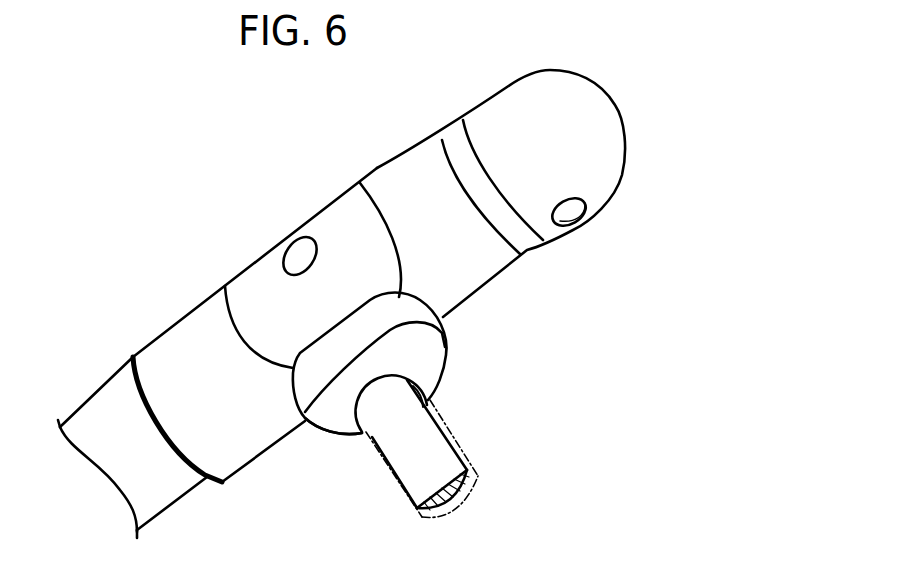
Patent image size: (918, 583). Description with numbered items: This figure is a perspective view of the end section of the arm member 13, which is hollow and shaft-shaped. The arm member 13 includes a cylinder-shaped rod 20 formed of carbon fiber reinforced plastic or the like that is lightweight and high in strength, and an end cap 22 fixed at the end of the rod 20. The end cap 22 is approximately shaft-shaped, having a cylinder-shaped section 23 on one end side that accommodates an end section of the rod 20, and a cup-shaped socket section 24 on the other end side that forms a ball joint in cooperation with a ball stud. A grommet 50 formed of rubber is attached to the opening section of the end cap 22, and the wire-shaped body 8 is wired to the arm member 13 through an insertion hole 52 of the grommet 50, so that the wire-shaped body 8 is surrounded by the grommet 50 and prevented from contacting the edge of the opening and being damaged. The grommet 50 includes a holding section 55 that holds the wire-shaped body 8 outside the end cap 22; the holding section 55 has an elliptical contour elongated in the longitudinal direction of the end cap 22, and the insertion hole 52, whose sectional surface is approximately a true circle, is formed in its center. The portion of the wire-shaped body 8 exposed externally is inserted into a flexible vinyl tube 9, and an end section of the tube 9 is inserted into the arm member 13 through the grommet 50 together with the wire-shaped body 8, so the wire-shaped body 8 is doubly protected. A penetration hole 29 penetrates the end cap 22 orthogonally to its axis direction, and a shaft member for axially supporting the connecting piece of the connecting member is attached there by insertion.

The wire-shaped body 8 is at (425, 452).
The tube 9 is at (443, 417).
The arm member 13 is at (158, 243).
The rod 20 is at (106, 412).
The end cap 22 is at (182, 345).
The cylinder-shaped section 23 is at (250, 290).
The socket section 24 is at (518, 100).
The penetration hole 29 is at (292, 242).
The grommet 50 is at (342, 447).
The insertion hole 52 is at (417, 377).
The holding section 55 is at (435, 342).